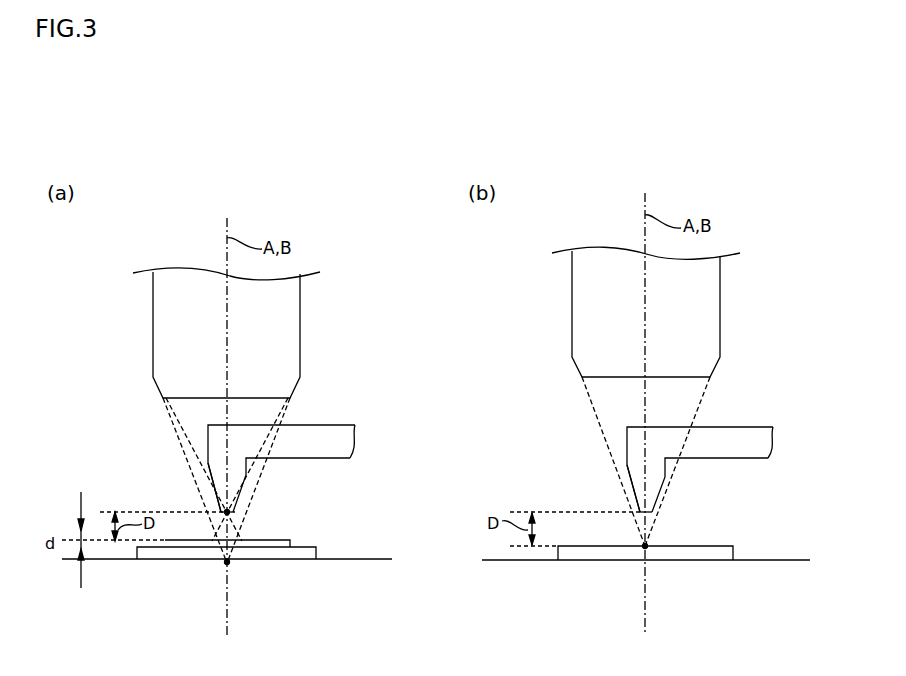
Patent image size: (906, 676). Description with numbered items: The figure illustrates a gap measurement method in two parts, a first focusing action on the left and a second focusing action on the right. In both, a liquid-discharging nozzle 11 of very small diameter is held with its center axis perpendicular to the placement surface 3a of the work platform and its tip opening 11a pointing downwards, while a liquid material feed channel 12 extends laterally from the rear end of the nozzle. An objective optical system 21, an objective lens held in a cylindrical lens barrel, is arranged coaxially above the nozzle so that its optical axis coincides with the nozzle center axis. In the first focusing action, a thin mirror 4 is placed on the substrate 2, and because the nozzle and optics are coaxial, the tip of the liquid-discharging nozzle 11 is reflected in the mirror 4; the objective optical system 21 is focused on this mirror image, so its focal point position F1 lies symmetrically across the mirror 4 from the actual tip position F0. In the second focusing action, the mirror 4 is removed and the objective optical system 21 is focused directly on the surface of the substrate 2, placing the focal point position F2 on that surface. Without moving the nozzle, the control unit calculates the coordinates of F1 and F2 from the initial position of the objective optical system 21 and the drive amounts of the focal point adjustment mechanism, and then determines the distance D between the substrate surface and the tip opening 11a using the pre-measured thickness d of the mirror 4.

The objective optical system 21 is at (300, 305).
The liquid material feed channel 12 is at (331, 424).
The liquid-discharging nozzle 11 is at (206, 471).
The tip opening 11a is at (214, 509).
The mirror 4 is at (290, 540).
The substrate 2 is at (316, 547).
The placement surface 3a is at (372, 559).
The actual position of the tip of the liquid-discharging nozzle F0 is at (237, 512).
The focal point position F1 is at (229, 565).
The focal point position F2 is at (647, 545).